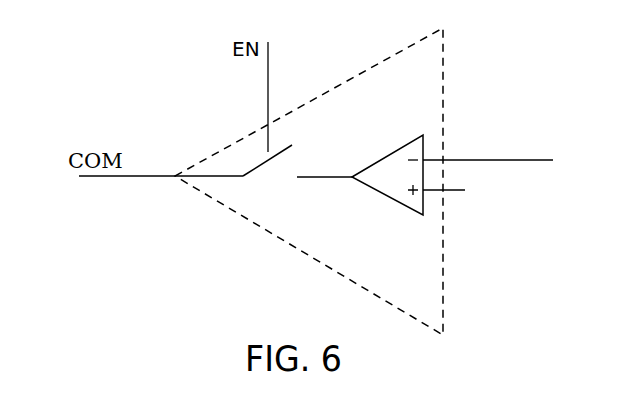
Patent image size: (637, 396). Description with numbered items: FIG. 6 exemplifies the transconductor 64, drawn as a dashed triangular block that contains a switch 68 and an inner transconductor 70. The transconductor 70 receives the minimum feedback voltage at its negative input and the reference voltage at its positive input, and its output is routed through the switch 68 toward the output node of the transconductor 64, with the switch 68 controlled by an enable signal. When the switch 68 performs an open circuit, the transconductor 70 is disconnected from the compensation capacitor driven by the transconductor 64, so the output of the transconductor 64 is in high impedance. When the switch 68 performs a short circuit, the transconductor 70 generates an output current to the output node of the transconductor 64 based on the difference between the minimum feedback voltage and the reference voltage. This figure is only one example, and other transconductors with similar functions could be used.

The transconductor 64 is at (378, 62).
The switch 68 is at (267, 185).
The transconductor 70 is at (392, 153).